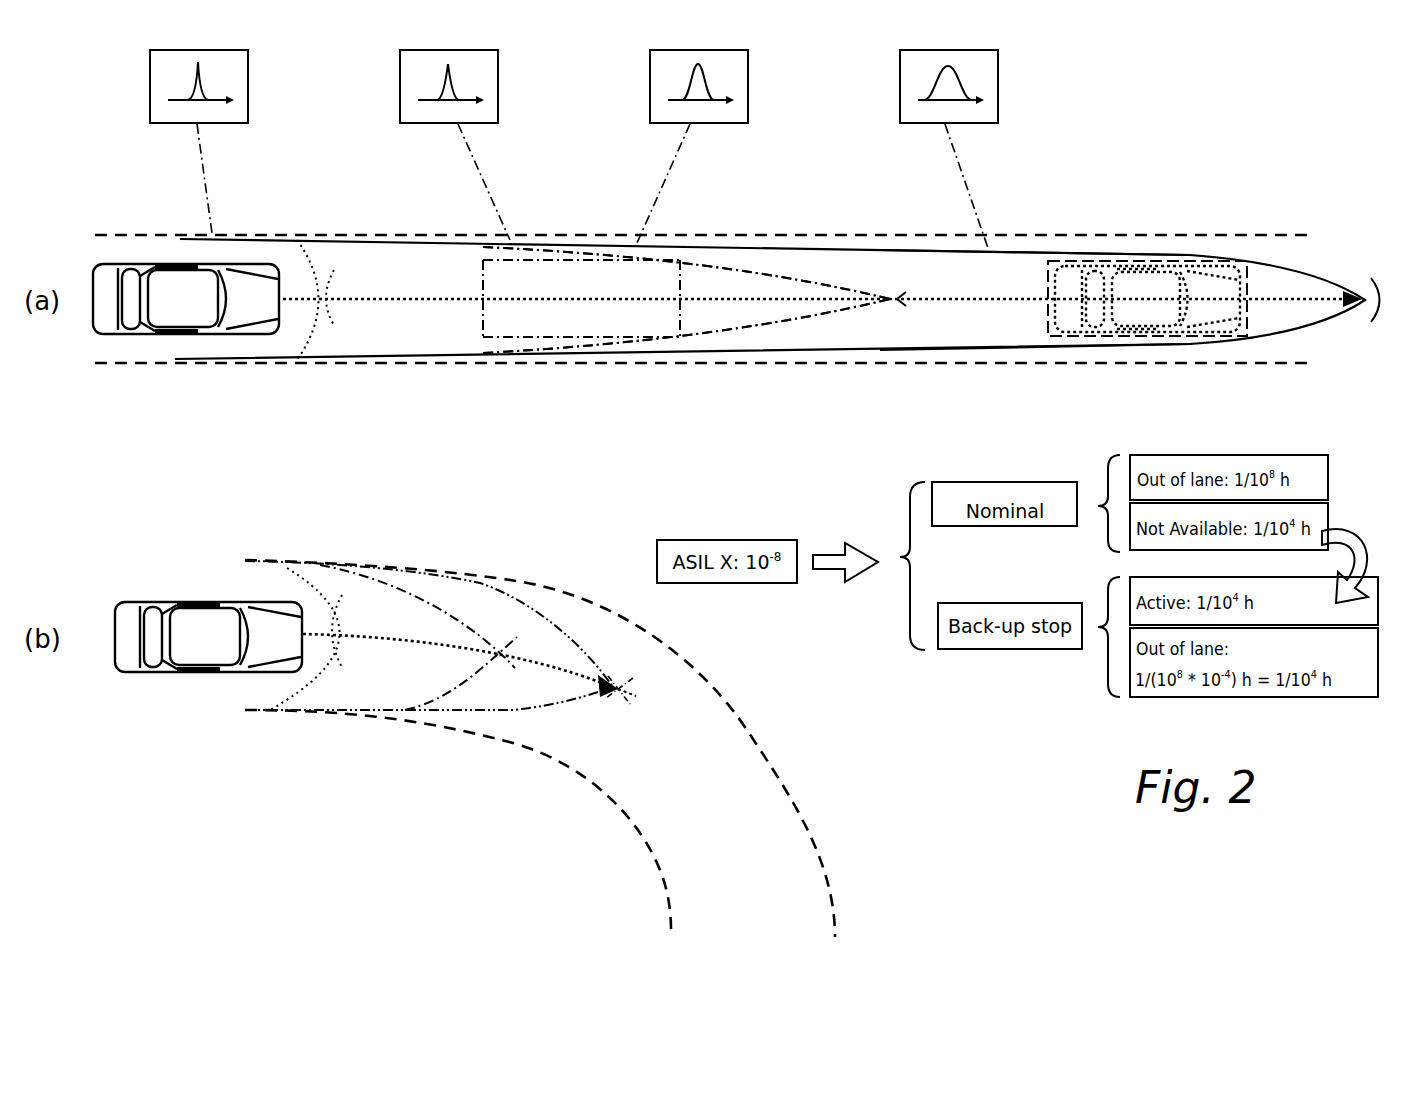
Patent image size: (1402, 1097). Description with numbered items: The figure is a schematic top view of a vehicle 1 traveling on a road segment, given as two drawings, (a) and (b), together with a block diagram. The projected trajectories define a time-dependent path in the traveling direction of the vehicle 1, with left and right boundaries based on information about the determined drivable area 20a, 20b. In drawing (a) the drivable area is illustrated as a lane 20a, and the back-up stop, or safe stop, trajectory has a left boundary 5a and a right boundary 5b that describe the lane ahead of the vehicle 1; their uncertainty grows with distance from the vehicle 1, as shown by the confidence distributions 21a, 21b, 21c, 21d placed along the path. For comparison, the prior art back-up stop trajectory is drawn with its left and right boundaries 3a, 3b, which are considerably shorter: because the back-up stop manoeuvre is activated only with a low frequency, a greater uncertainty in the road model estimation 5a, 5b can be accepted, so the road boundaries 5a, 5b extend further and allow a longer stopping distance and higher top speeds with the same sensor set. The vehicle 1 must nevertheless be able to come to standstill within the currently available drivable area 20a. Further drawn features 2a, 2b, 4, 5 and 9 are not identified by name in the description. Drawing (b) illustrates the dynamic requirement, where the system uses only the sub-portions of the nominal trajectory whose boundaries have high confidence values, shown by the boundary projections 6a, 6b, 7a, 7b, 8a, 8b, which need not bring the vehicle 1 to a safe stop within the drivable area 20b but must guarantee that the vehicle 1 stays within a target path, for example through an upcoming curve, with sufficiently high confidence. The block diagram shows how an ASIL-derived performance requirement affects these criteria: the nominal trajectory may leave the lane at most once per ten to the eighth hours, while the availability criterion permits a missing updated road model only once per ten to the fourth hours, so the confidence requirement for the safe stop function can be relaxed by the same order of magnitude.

The vehicle 1 is at (136, 334).
The left lane boundary 2a is at (551, 240).
The right lane boundary 2b is at (533, 367).
The left boundary of prior art back-up stop trajectory 3a is at (740, 268).
The right boundary of prior art back-up stop trajectory 3b is at (703, 335).
The safety zone 4 is at (487, 340).
The drivable area envelope 5 is at (515, 283).
The left boundary 5a is at (1007, 250).
The right boundary 5b is at (1017, 348).
The boundary projection 6a is at (295, 245).
The boundary projection 6b is at (313, 337).
The boundary projection 7a is at (467, 607).
The boundary projection 7b is at (467, 687).
The boundary projection 8a is at (568, 638).
The boundary projection 8b is at (547, 710).
The back-up stop trajectory 9 is at (420, 643).
The drivable area 20a is at (760, 292).
The drivable area 20b is at (318, 615).
The confidence distribution 21a is at (248, 113).
The confidence distribution 21b is at (498, 113).
The confidence distribution 21c is at (748, 113).
The confidence distribution 21d is at (998, 113).